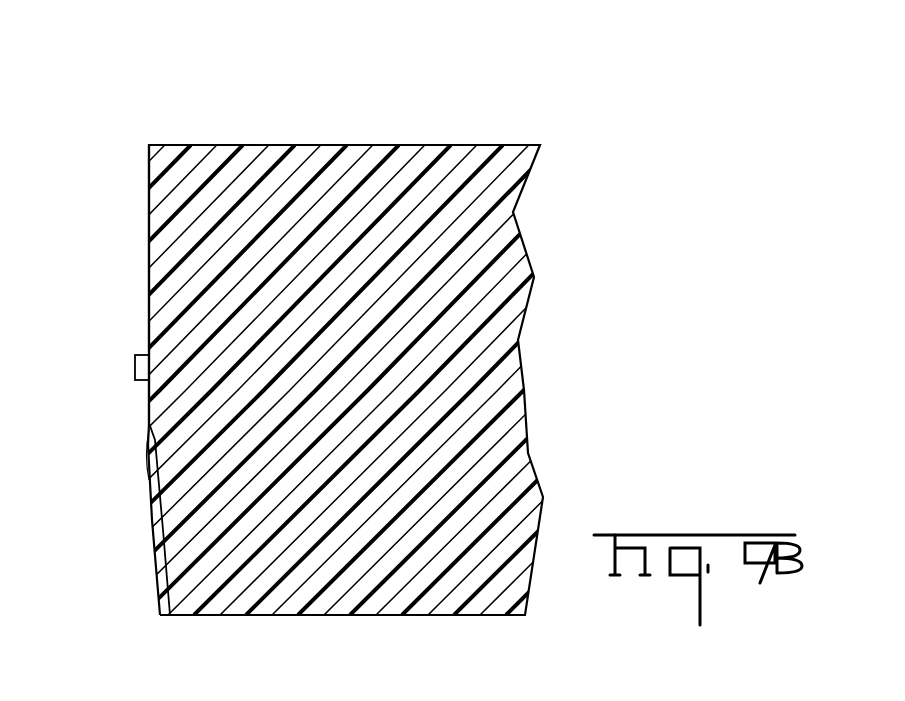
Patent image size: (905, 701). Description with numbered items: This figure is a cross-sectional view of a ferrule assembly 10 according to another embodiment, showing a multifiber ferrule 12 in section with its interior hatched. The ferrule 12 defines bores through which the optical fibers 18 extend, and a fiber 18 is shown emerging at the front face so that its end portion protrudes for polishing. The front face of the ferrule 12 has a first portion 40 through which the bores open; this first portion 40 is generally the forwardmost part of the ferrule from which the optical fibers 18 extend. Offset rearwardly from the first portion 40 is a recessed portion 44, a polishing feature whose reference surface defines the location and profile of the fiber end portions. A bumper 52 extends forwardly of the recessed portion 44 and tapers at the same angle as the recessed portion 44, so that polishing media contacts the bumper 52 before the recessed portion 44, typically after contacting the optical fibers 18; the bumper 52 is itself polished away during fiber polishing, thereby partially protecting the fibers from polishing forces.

The ferrule assembly 10 is at (452, 332).
The multifiber ferrule 12 is at (362, 146).
The optical fibers 18 is at (135, 368).
The first portion 40 is at (149, 210).
The recessed portion 44 is at (163, 533).
The bumper 52 is at (150, 488).